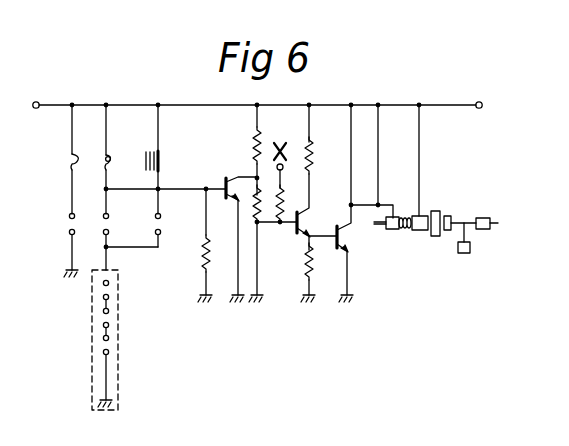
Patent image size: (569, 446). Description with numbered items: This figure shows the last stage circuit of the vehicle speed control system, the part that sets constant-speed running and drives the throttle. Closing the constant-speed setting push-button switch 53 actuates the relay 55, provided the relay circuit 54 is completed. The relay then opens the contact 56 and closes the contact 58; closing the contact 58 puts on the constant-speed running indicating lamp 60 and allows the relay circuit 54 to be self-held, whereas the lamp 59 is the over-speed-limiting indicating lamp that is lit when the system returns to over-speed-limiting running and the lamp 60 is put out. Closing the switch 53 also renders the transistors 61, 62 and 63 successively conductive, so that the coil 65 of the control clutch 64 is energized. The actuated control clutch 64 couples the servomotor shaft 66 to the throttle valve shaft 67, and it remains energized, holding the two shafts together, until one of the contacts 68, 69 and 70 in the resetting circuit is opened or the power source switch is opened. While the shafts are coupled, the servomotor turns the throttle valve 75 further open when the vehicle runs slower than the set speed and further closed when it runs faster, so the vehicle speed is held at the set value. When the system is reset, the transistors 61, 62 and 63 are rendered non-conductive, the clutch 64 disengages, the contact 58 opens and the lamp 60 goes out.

The constant-speed setting push-button switch 53 is at (162, 218).
The relay circuit 54 is at (158, 386).
The relay 55 is at (160, 162).
The contact 56 is at (66, 229).
The contact 58 is at (110, 218).
The lamp 59 is at (70, 162).
The constant-speed running indicating lamp 60 is at (111, 162).
The transistor 61 is at (226, 178).
The transistor 62 is at (296, 236).
The transistor 63 is at (340, 248).
The control clutch 64 is at (445, 208).
The coil 65 is at (411, 232).
The servomotor shaft 66 is at (377, 231).
The throttle valve shaft 67 is at (466, 221).
The contact 68 is at (110, 285).
The contact 69 is at (110, 313).
The contact 70 is at (102, 350).
The throttle valve 75 is at (502, 230).